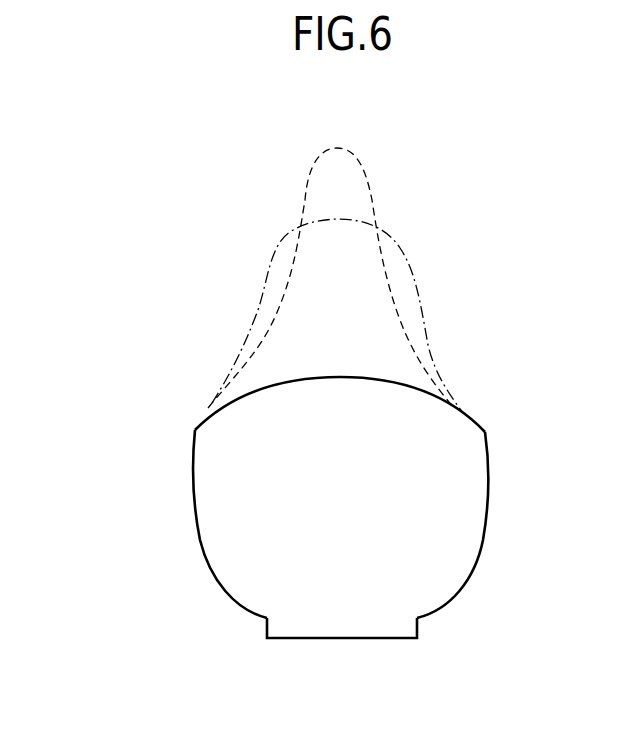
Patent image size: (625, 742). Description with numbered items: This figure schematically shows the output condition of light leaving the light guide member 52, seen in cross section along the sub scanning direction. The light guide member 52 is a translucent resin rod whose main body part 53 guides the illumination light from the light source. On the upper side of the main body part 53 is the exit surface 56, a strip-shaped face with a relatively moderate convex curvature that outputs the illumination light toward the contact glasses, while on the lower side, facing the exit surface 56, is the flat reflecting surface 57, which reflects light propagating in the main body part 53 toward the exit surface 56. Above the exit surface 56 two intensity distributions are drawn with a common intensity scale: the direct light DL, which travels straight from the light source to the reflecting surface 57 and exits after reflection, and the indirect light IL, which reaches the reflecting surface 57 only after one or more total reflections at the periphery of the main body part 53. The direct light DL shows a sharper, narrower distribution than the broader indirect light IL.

The light guide member 52 is at (125, 452).
The main body part 53 is at (488, 523).
The exit surface 56 is at (390, 380).
The reflecting surface 57 is at (350, 640).
The direct light DL is at (372, 190).
The indirect light IL is at (417, 297).